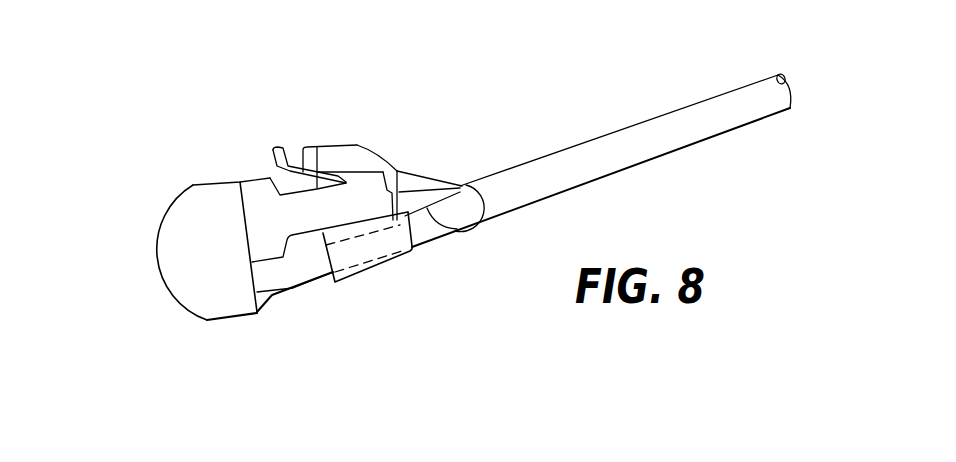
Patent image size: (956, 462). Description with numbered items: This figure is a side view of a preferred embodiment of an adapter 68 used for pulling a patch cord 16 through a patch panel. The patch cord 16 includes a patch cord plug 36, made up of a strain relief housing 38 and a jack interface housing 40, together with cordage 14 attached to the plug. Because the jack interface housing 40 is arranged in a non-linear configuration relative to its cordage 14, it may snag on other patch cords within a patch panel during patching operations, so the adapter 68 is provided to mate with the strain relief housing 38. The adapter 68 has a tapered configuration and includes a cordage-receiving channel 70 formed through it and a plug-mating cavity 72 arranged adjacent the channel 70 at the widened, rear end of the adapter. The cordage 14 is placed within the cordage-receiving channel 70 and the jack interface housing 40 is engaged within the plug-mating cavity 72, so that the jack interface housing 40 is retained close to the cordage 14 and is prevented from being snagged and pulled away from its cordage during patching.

The cordage 14 is at (633, 150).
The patch cord 16 is at (405, 122).
The patch cord plug 36 is at (128, 228).
The strain relief housing 38 is at (198, 293).
The jack interface housing 40 is at (263, 200).
The adapter 68 is at (441, 167).
The cordage-receiving channel 70 is at (365, 254).
The plug-mating cavity 72 is at (318, 238).